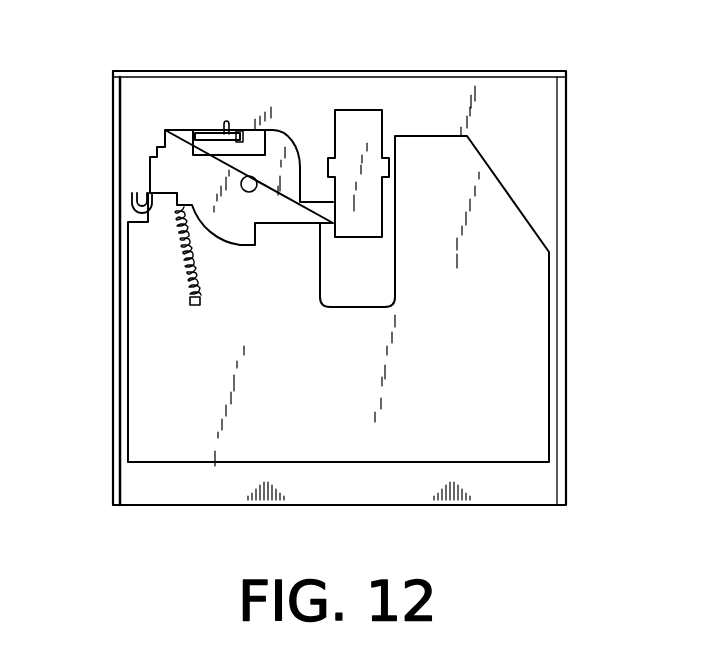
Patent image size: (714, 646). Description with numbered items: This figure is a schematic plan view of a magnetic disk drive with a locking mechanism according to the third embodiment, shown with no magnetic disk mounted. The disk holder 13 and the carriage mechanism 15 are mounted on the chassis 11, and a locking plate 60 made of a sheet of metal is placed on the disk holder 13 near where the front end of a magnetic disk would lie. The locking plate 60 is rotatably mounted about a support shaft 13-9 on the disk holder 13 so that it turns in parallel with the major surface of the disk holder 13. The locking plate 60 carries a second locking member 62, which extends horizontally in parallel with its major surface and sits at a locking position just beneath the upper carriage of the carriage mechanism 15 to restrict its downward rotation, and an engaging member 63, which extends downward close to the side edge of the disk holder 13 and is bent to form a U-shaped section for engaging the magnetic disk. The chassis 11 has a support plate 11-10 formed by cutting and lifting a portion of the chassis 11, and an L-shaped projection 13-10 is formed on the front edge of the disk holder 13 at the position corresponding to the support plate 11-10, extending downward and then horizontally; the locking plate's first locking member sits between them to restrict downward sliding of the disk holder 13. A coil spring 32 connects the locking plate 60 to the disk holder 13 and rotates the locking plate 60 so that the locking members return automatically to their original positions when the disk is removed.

The chassis 11 is at (543, 138).
The disk holder 13 is at (527, 288).
The carriage mechanism 15 is at (368, 112).
The second locking member 62 is at (318, 224).
The locking plate 60 is at (235, 253).
The support shaft 13-9 is at (253, 187).
The L-shaped projection 13-10 is at (233, 131).
The support plate 11-10 is at (226, 121).
The engaging member 63 is at (143, 214).
The coil spring 32 is at (187, 274).